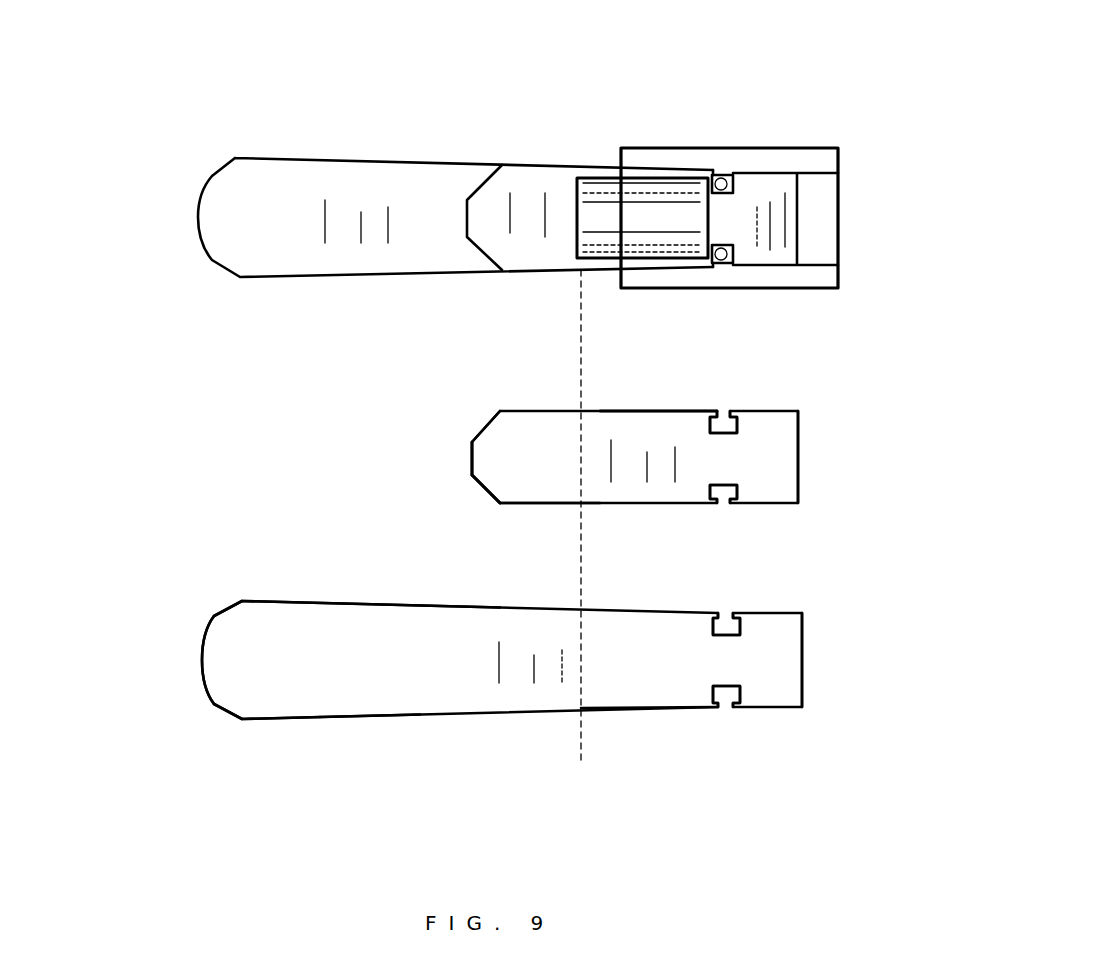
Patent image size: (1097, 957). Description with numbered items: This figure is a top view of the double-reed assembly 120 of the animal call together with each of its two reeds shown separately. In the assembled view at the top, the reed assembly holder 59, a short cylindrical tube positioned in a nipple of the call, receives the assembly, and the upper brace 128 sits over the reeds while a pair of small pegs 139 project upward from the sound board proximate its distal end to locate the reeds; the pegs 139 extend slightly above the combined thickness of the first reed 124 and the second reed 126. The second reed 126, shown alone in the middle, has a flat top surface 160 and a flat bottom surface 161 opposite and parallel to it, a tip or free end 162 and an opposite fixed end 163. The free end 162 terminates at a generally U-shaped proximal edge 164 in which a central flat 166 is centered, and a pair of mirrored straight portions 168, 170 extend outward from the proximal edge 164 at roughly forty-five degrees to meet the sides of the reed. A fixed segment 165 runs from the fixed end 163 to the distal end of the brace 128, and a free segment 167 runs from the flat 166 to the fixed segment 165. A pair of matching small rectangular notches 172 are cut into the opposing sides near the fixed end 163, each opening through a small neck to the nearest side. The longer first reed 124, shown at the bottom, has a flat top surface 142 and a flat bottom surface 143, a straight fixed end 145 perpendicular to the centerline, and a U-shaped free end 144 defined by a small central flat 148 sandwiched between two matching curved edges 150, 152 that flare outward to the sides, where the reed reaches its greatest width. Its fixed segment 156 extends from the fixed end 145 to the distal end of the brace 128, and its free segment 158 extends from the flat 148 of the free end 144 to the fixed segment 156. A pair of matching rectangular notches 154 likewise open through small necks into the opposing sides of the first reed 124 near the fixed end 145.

The double-reed assembly 120 is at (585, 100).
The first reed 124 is at (353, 207).
The second reed 126 is at (529, 208).
The upper brace 128 is at (652, 212).
The pegs 139 is at (733, 249).
The reed assembly holder 59 is at (802, 163).
The top surface of second reed 160 is at (645, 445).
The bottom surface of second reed 161 is at (593, 390).
The free end of second reed 162 is at (470, 476).
The fixed end of second reed 163 is at (802, 460).
The proximal edge of second reed 164 is at (482, 460).
The fixed segment of second reed 165 is at (675, 423).
The central flat of second reed 166 is at (470, 463).
The free segment of second reed 167 is at (533, 483).
The straight portion 168 is at (483, 492).
The straight portion 170 is at (485, 427).
The notches of second reed 172 is at (722, 425).
The top surface of first reed 142 is at (398, 645).
The bottom surface of first reed 143 is at (490, 735).
The free end of first reed 144 is at (265, 668).
The fixed end of first reed 145 is at (803, 668).
The central flat of first reed 148 is at (202, 662).
The curved edge 150 is at (217, 705).
The curved edge 152 is at (218, 615).
The notches of first reed 154 is at (712, 627).
The fixed segment of first reed 156 is at (627, 675).
The free segment of first reed 158 is at (358, 677).